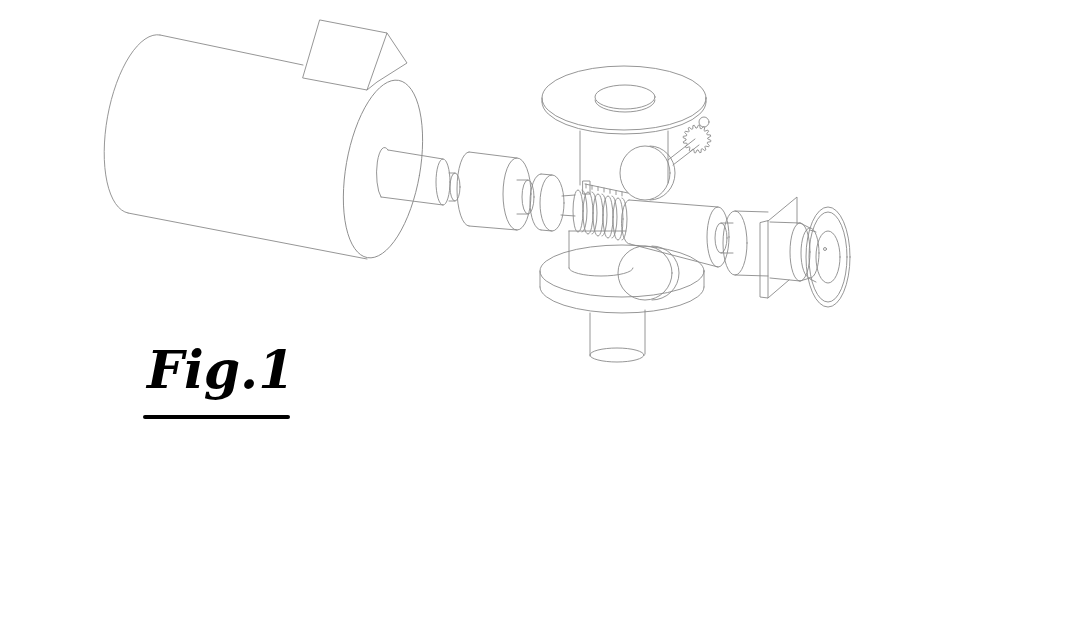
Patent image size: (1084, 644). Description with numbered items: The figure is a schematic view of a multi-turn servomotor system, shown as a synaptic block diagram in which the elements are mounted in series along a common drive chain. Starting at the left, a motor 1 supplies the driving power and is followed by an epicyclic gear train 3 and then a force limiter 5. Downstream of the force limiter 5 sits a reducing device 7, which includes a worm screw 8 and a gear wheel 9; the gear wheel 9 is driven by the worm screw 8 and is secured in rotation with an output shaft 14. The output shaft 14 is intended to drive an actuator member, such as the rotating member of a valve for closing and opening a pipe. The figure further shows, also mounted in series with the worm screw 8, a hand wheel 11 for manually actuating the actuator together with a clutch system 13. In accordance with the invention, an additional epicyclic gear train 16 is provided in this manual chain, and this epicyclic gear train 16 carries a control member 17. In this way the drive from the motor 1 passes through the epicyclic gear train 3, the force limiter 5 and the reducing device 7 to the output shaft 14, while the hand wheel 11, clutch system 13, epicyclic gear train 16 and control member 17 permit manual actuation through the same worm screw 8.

The motor 1 is at (234, 51).
The epicyclic gear train 3 is at (498, 155).
The force limiter 5 is at (713, 207).
The reducing device 7 is at (721, 139).
The worm screw 8 is at (603, 234).
The gear wheel 9 is at (587, 185).
The hand wheel 11 is at (851, 221).
The clutch system 13 is at (803, 222).
The output shaft 14 is at (600, 335).
The epicyclic gear train 16 is at (826, 271).
The control member 17 is at (828, 250).